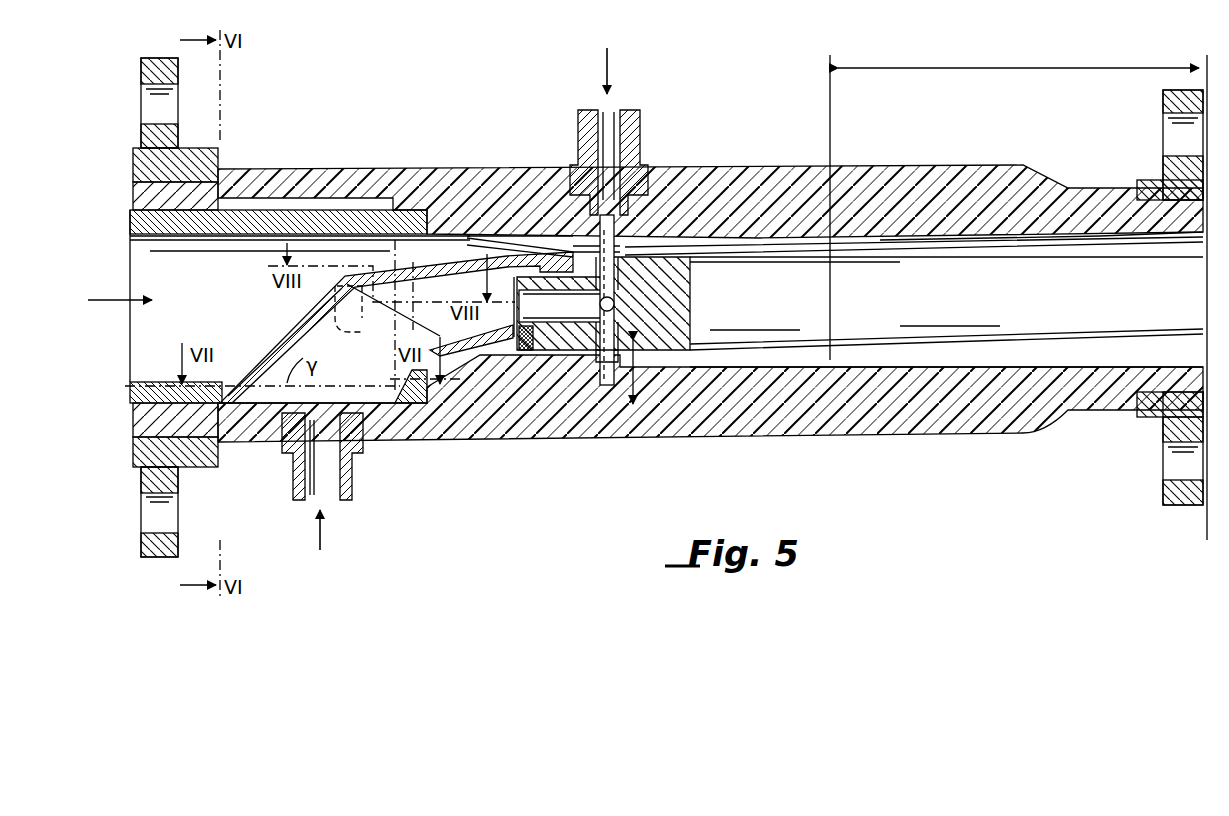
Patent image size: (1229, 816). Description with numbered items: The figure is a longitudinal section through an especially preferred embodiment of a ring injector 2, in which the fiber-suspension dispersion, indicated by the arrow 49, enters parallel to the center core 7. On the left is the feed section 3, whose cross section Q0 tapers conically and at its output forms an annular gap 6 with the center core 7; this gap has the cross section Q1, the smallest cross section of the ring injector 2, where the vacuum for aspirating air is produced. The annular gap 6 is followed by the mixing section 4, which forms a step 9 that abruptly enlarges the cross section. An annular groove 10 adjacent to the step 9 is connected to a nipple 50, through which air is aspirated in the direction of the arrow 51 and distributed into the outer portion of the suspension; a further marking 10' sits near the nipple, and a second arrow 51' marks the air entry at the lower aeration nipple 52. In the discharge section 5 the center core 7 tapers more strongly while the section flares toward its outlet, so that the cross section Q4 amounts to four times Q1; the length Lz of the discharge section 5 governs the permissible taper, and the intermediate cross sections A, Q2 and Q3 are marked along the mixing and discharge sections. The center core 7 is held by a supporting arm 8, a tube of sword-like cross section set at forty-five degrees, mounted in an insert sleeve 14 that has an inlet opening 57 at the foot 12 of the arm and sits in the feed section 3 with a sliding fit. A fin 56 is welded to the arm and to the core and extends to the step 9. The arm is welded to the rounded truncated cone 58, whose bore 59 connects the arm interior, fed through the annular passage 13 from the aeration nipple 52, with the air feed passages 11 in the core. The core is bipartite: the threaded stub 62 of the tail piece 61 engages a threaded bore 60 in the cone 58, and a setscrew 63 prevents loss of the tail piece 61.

The ring injector 2 is at (716, 106).
The feed section 3 is at (300, 256).
The cross section of the feed section Q0 is at (226, 266).
The mixing section 4 is at (700, 368).
The discharge section 5 is at (1126, 358).
The annular gap 6 is at (561, 191).
The cross section of the annular gap Q1 is at (564, 247).
The center core 7 is at (934, 258).
The supporting arm 8 is at (277, 342).
The step 9 is at (618, 384).
The annular groove 10 is at (637, 251).
The valve needle 10' is at (582, 240).
The air feed passages 11 is at (612, 328).
The foot of the supporting arm 12 is at (260, 374).
The annular passage 13 is at (349, 207).
The insert sleeve 14 is at (163, 392).
The arrow indicating dispersion inflow 49 is at (120, 279).
The nipple 50 is at (588, 130).
The arrow indicating air aspiration 51 is at (639, 65).
The feed arrow 51' is at (304, 544).
The aeration nipple 52 is at (326, 473).
The fin 56 is at (466, 352).
The inlet opening 57 is at (268, 393).
The rounded truncated cone 58 is at (404, 266).
The bore 59 is at (437, 298).
The threaded bore 60 is at (528, 254).
The tail piece 61 is at (762, 272).
The threaded stub 62 is at (596, 357).
The setscrew 63 is at (514, 334).
The outlet A, Q2 A is at (613, 390).
The flow Q2 is at (640, 356).
The flow Q3 is at (830, 356).
The cross section of the discharge section outlet Q4 is at (1207, 345).
The length of the discharge section Lz is at (1013, 67).